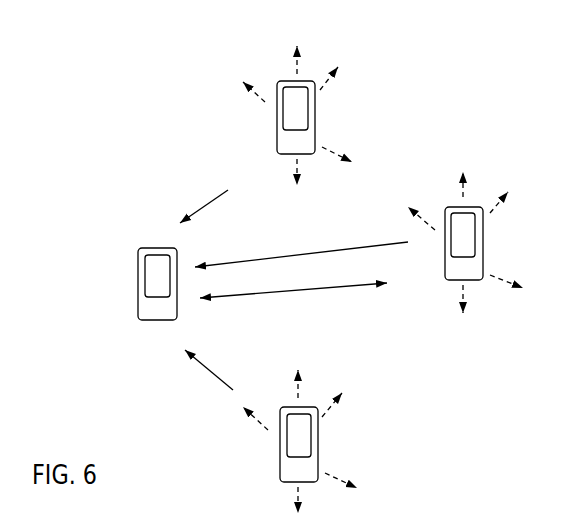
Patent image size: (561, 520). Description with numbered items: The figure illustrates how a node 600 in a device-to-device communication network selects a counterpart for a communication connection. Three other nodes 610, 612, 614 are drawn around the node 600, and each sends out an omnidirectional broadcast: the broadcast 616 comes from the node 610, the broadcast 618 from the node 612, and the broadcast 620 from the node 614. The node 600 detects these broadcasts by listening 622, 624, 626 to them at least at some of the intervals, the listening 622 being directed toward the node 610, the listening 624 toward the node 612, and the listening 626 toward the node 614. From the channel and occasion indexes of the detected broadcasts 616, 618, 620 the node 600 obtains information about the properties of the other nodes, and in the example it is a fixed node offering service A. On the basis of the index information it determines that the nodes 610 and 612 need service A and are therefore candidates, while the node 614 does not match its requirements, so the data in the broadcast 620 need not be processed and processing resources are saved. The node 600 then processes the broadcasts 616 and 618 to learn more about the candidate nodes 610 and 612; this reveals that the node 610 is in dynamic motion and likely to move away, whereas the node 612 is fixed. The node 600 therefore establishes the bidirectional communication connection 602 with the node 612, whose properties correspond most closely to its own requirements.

The node 600 is at (138, 283).
The bidirectional communication connection 602 is at (336, 291).
The node 610 is at (277, 130).
The node 612 is at (445, 271).
The node 614 is at (280, 474).
The broadcast 616 is at (293, 66).
The broadcast 618 is at (462, 192).
The broadcast 620 is at (295, 392).
The listening 622 is at (203, 207).
The listening 624 is at (270, 257).
The listening 626 is at (212, 374).